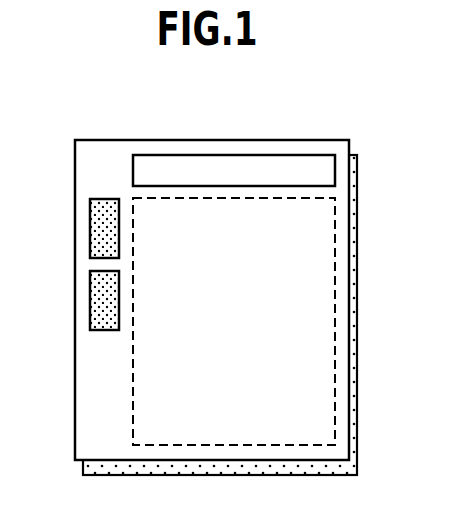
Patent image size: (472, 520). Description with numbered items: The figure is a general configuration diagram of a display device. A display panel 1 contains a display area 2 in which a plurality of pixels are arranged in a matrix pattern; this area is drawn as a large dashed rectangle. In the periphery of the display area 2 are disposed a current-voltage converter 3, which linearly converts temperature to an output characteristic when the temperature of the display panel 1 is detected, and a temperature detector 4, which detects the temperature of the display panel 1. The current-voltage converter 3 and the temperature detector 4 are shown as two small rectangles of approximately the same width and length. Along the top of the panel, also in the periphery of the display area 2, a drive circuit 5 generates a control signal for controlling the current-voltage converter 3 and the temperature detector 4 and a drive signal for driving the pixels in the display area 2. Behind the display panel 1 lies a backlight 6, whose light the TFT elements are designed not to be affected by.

The display panel 1 is at (343, 186).
The display area 2 is at (134, 424).
The current-voltage converter 3 is at (90, 222).
The temperature detector 4 is at (90, 294).
The drive circuit 5 is at (282, 140).
The backlight 6 is at (357, 250).